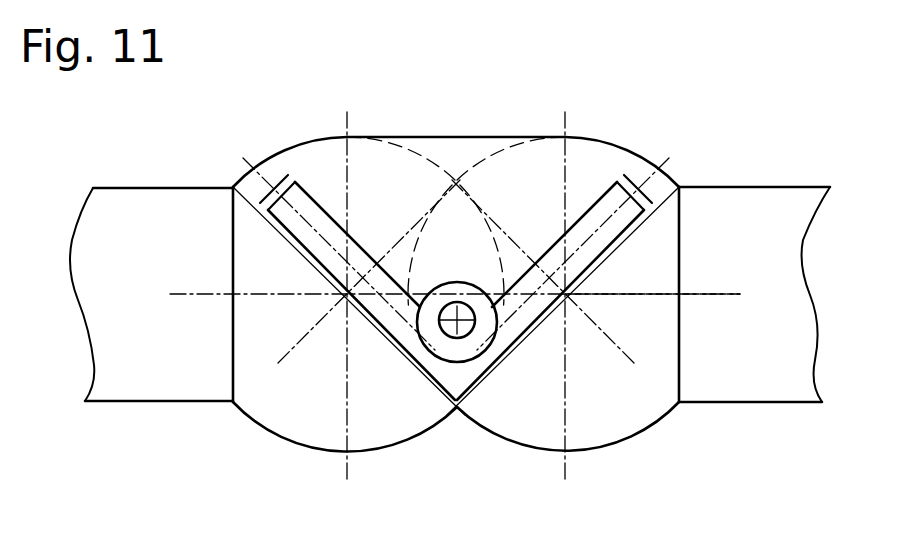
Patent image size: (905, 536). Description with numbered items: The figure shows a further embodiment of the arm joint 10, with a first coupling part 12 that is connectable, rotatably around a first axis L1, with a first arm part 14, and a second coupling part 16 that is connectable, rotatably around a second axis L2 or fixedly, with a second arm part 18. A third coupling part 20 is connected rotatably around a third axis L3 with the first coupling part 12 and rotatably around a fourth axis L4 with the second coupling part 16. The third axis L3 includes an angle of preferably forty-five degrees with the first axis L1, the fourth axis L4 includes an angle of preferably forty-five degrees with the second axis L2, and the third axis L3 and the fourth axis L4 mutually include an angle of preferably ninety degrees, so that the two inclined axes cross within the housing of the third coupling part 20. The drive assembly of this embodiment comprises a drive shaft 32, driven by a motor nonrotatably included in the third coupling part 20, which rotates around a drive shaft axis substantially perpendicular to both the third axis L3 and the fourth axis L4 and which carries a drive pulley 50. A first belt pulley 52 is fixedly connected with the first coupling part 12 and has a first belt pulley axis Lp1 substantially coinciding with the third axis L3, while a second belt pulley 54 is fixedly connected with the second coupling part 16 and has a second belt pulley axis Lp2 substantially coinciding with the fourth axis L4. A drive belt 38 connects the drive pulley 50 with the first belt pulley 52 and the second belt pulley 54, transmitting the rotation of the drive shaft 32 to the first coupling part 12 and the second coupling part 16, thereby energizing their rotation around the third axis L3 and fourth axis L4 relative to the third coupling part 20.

The arm joint 10 is at (601, 111).
The first coupling part 12 is at (335, 375).
The first arm part 14 is at (149, 355).
The second coupling part 16 is at (610, 393).
The second arm part 18 is at (769, 352).
The third coupling part 20 is at (384, 203).
The drive shaft 32 is at (458, 327).
The drive belt 38 is at (429, 358).
The drive pulley 50 is at (477, 338).
The first belt pulley 52 is at (291, 175).
The second belt pulley 54 is at (640, 214).
The first axis L1 is at (183, 293).
The second axis L2 is at (725, 294).
The third axis L3 is at (296, 345).
The first belt pulley axis Lp1 is at (315, 314).
The fourth axis L4 is at (623, 350).
The second belt pulley axis Lp2 is at (600, 308).